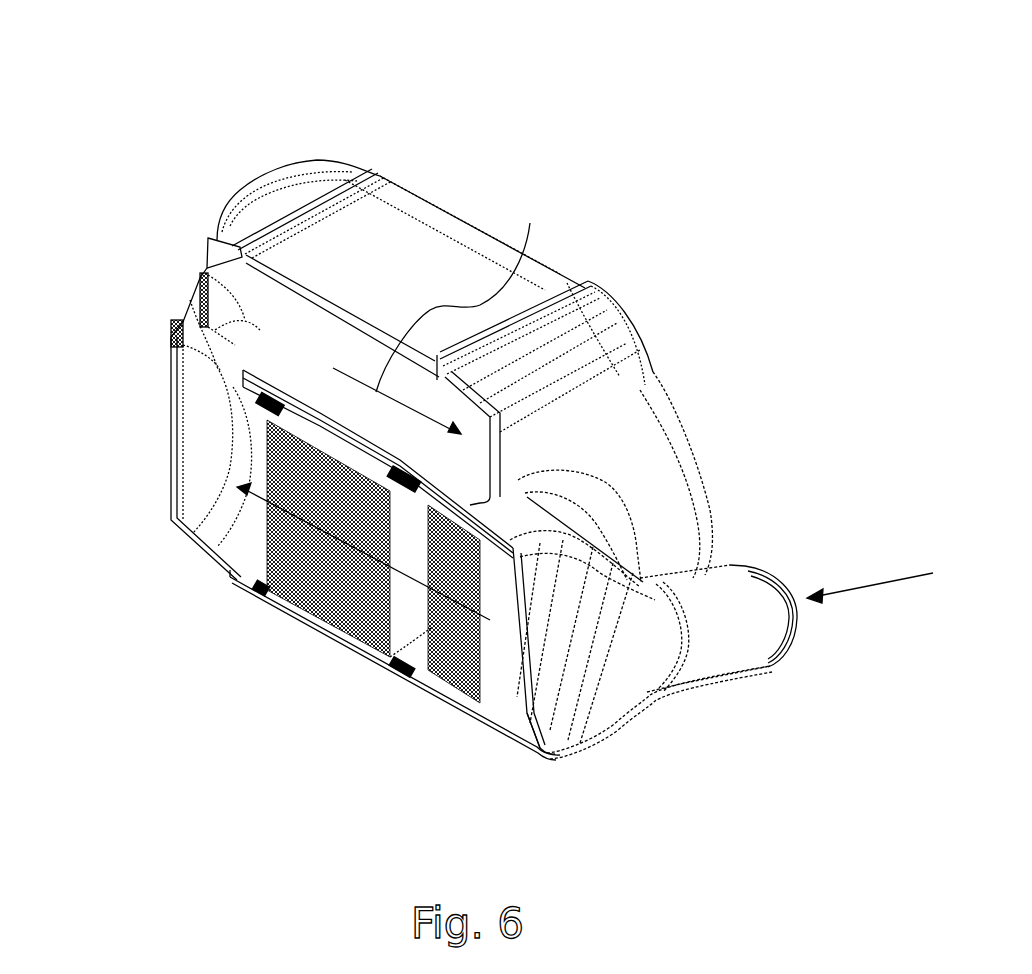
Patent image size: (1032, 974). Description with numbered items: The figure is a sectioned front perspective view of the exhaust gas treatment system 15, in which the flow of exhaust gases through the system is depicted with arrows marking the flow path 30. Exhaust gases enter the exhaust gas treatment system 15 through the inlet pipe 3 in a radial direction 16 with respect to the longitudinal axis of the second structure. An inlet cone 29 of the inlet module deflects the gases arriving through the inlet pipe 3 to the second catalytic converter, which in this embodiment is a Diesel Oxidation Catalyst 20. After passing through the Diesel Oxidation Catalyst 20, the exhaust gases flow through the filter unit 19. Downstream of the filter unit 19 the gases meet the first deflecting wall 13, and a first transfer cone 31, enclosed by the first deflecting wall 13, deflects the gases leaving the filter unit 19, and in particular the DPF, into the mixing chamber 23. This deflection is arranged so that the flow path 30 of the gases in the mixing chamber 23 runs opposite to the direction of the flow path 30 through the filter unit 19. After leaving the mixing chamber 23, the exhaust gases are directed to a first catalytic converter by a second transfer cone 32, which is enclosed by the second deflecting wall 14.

The inlet pipe 3 is at (730, 640).
The first deflecting wall 13 is at (394, 556).
The second deflecting wall 14 is at (652, 467).
The exhaust gas treatment system 15 is at (446, 160).
The radial direction 16 is at (857, 593).
The filter unit 19 is at (320, 578).
The Diesel Oxidation Catalyst 20 is at (457, 645).
The mixing chamber 23 is at (297, 377).
The inlet cone 29 is at (527, 690).
The flow path 30 is at (195, 610).
The first transfer cone 31 is at (200, 428).
The second transfer cone 32 is at (483, 452).